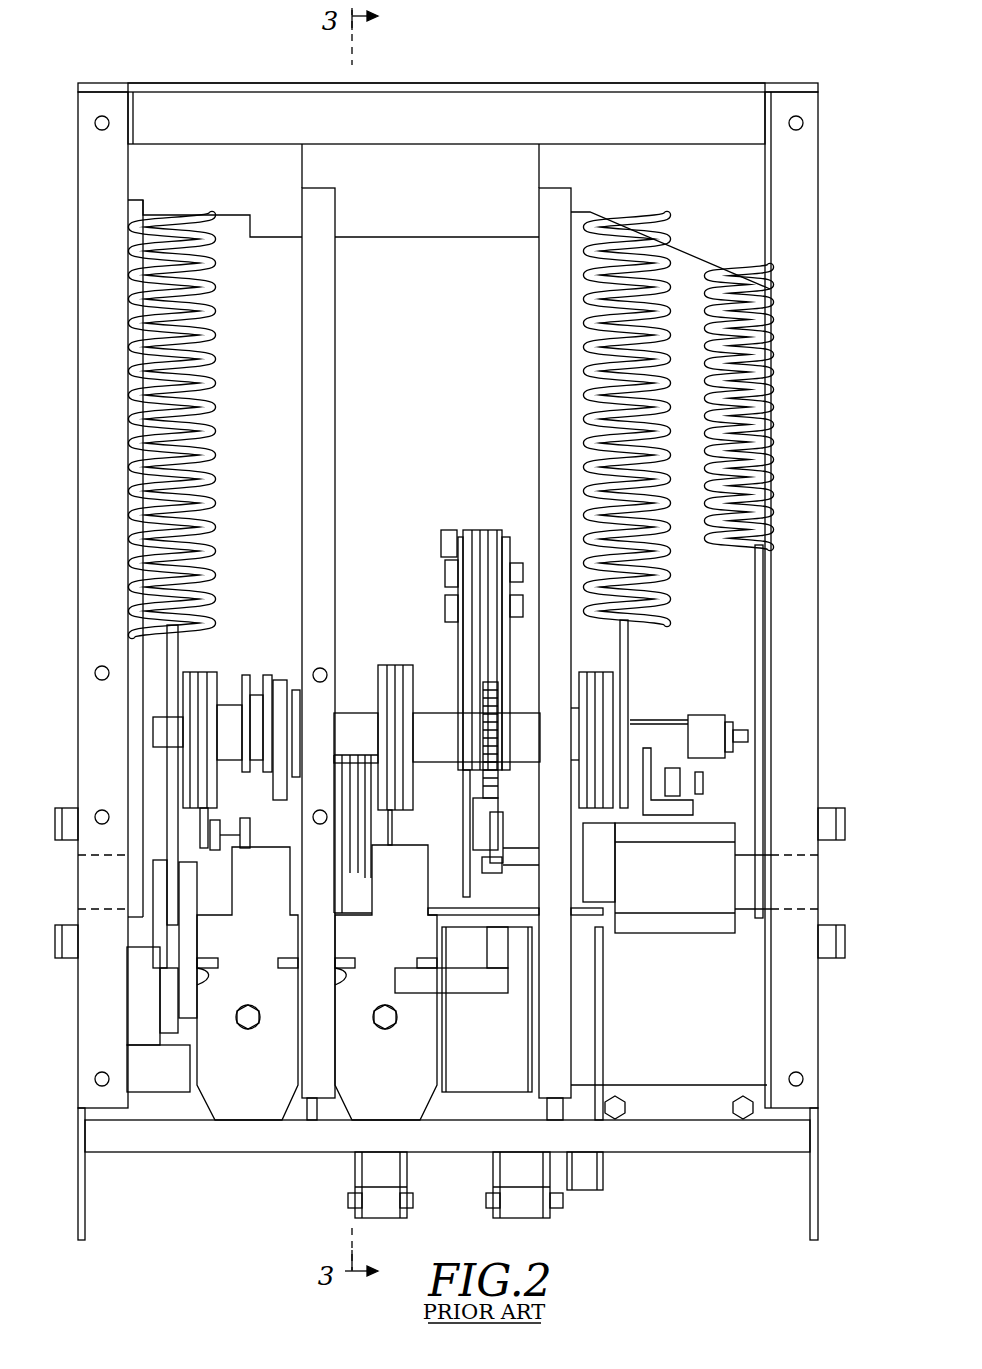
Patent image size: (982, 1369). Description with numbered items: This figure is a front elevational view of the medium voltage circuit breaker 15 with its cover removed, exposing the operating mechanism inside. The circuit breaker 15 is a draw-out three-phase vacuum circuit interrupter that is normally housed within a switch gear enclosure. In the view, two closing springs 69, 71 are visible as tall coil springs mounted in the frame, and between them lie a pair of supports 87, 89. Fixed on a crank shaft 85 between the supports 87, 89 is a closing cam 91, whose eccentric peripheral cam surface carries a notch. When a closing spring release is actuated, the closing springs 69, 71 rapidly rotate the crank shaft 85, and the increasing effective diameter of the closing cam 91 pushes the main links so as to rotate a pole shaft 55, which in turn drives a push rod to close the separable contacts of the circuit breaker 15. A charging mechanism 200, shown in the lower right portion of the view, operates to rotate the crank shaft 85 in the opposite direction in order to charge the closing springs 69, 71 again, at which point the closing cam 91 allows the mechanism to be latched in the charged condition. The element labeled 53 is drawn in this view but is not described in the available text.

The circuit breaker 15 is at (772, 65).
The closing spring 69 is at (207, 310).
The closing spring 71 is at (590, 318).
The support 87 is at (320, 391).
The support 89 is at (550, 398).
The drive assembly 53 is at (487, 487).
The closing cam 91 is at (402, 665).
The crank shaft 85 is at (356, 723).
The pole shaft 55 is at (750, 905).
The charging mechanism 200 is at (685, 997).